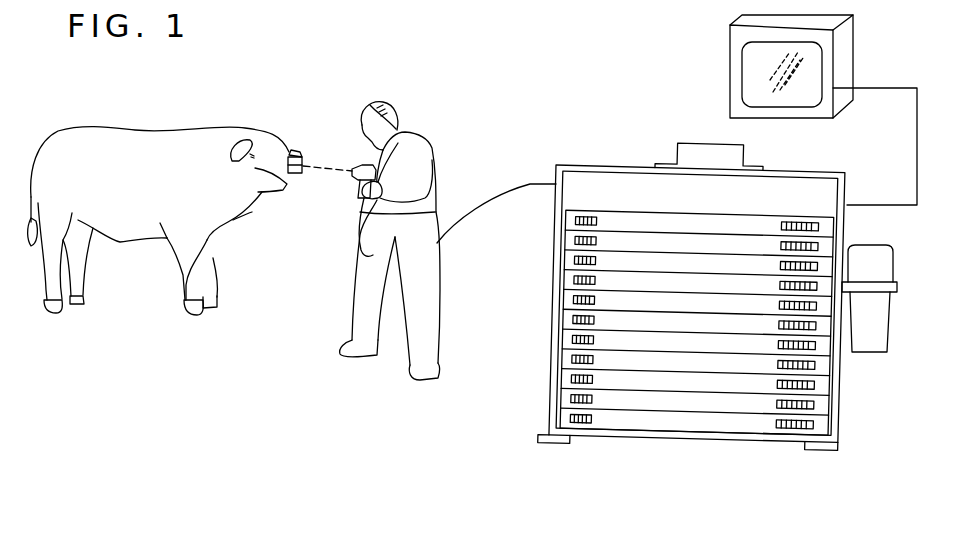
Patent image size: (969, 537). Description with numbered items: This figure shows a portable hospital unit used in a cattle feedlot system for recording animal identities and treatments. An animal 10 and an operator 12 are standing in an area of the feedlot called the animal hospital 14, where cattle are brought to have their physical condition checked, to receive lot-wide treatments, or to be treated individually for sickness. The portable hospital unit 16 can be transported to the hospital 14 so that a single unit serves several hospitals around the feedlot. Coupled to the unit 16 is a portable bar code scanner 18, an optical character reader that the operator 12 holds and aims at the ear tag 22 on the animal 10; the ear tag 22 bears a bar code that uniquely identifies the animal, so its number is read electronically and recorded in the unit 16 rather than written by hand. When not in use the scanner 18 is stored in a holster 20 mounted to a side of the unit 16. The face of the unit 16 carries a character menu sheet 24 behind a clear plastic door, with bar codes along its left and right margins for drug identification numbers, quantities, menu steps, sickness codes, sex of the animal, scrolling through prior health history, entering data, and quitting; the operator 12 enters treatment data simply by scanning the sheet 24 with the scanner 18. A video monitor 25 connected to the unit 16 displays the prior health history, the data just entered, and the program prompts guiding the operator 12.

The animal 10 is at (130, 130).
The operator 12 is at (431, 140).
The animal hospital 14 is at (294, 283).
The portable hospital unit 16 is at (615, 165).
The portable bar code scanner 18 is at (351, 177).
The holster 20 is at (893, 270).
The ear tag 22 is at (303, 162).
The character menu sheet 24 is at (568, 351).
The video monitor 25 is at (845, 50).